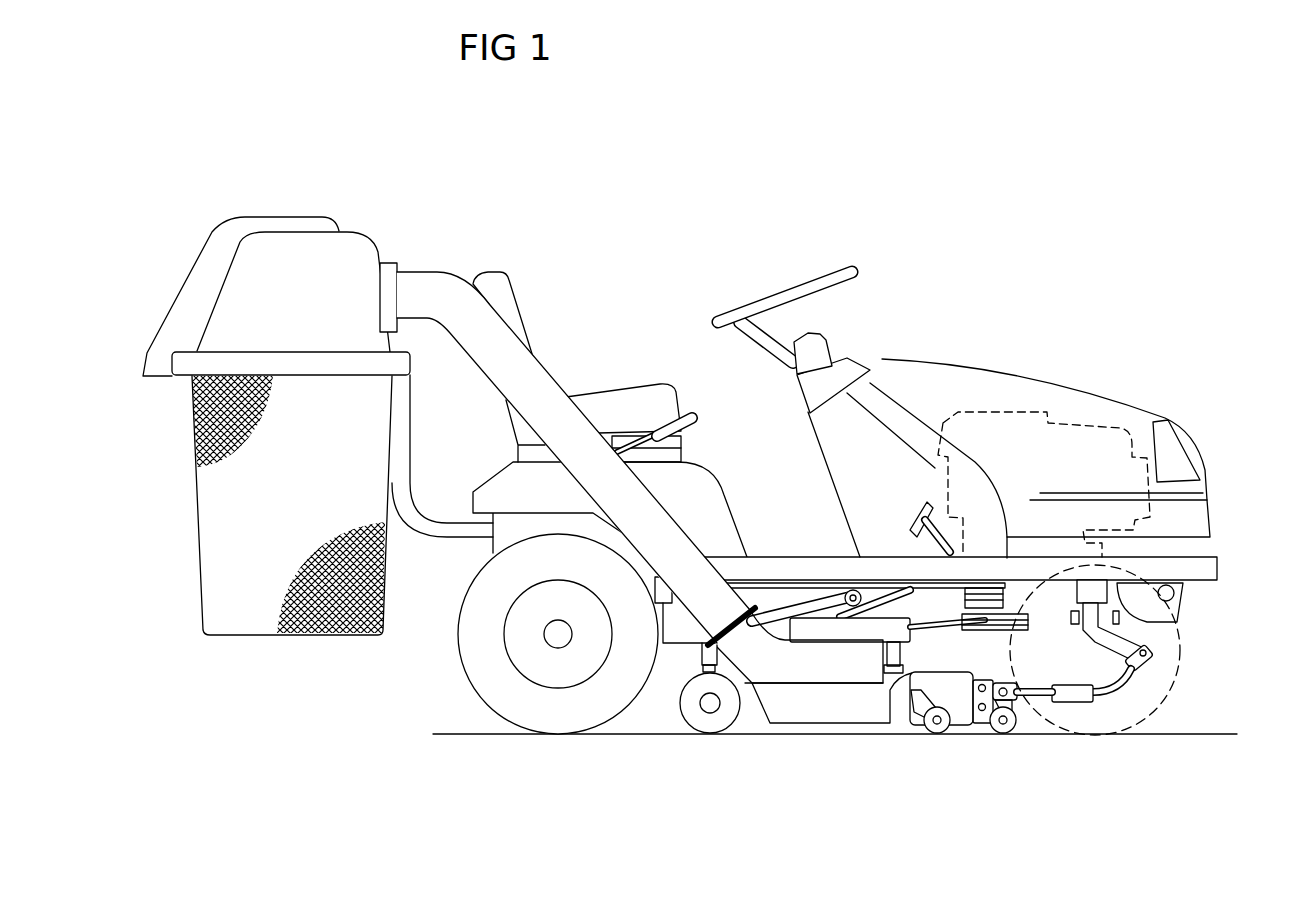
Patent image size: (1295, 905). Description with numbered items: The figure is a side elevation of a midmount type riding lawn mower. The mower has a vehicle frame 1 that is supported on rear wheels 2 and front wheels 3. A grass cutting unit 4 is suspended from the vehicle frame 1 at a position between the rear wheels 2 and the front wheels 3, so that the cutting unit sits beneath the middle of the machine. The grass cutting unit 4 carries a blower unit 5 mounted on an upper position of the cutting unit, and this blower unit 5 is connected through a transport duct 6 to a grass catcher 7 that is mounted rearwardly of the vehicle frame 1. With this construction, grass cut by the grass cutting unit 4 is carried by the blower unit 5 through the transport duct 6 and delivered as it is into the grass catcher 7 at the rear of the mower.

The vehicle frame 1 is at (1218, 572).
The rear wheels 2 is at (558, 718).
The front wheels 3 is at (1123, 720).
The grass cutting unit 4 is at (896, 742).
The blower unit 5 is at (800, 670).
The transport duct 6 is at (553, 387).
The grass catcher 7 is at (207, 522).